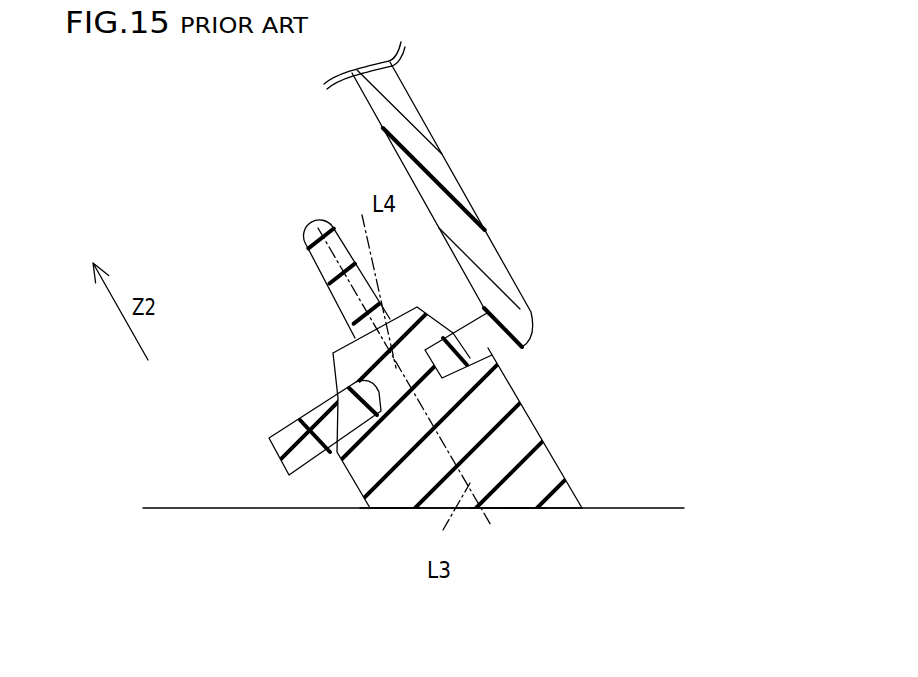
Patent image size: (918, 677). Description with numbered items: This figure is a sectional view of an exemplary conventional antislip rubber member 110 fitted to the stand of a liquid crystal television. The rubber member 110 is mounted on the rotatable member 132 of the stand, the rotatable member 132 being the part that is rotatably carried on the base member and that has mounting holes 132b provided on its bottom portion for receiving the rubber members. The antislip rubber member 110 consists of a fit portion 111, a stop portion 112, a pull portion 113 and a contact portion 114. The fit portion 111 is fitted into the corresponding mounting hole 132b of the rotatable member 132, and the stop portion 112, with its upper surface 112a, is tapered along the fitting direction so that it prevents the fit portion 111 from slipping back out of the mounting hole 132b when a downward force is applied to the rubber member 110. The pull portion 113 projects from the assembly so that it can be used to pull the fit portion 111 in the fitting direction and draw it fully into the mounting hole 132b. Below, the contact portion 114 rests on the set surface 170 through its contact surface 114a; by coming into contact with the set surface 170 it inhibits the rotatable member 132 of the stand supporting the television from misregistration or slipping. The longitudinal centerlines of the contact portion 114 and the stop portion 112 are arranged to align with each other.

The antislip rubber member 110 is at (471, 363).
The fit portion 111 is at (452, 356).
The stop portion 112 is at (333, 352).
The upper surface of the stop portion 112a is at (394, 318).
The pull portion 113 is at (323, 223).
The contact portion 114 is at (356, 481).
The contact surface 114a is at (343, 422).
The rotatable member 132 is at (416, 258).
The mounting hole 132b is at (342, 379).
The set surface 170 is at (166, 508).